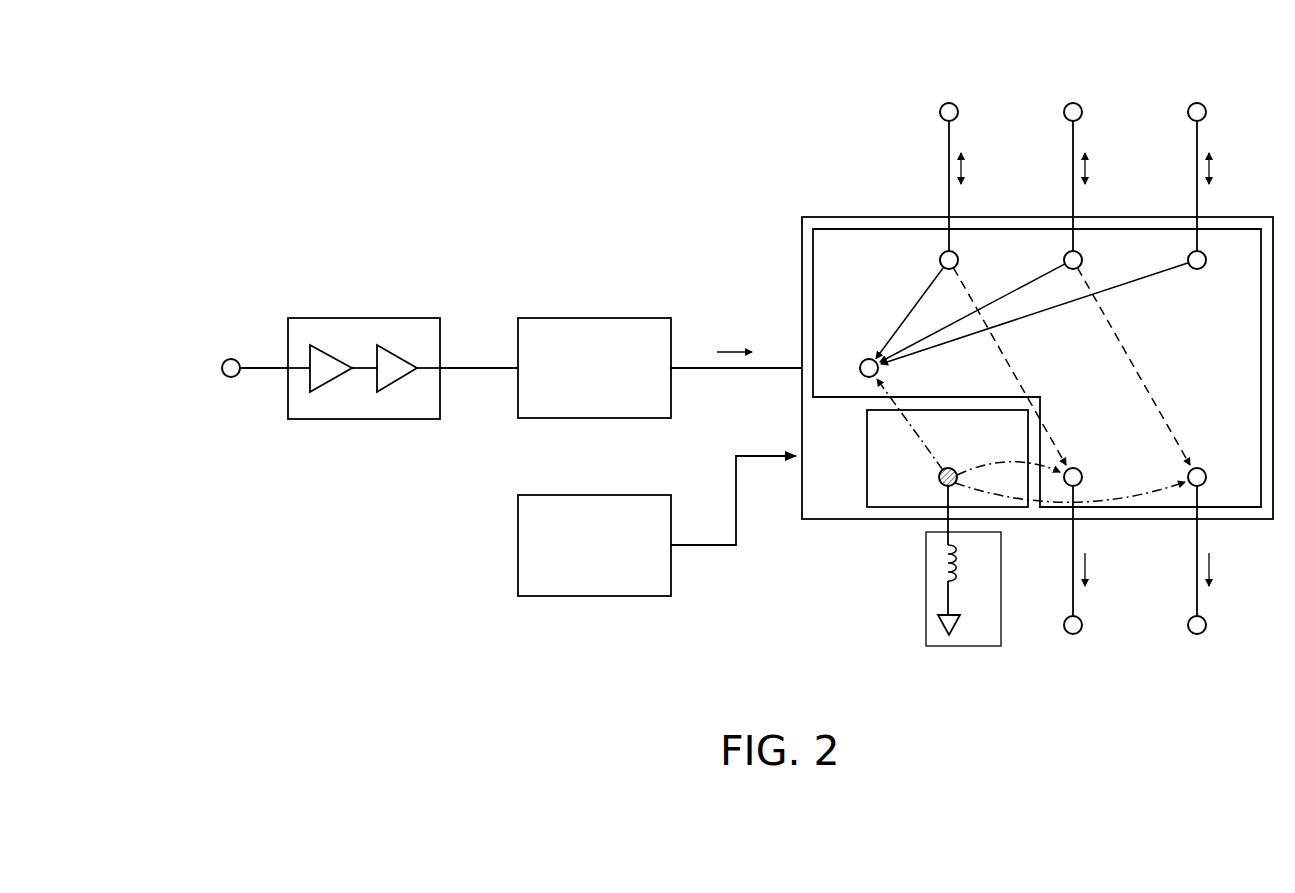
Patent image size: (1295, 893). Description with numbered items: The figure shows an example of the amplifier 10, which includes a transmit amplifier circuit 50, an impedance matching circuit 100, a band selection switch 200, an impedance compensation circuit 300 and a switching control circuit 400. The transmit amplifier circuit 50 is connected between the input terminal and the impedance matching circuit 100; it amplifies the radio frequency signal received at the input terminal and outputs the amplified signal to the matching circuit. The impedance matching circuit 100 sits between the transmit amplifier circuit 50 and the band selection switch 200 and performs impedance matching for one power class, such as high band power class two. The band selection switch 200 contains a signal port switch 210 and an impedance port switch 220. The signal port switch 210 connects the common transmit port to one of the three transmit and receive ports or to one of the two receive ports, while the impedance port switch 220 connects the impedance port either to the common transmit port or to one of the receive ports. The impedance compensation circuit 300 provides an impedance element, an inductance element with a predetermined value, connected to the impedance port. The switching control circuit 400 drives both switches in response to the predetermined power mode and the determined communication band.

The amplifier 10 is at (700, 76).
The transmit amplifier circuit 50 is at (405, 318).
The impedance matching circuit 100 is at (636, 318).
The band selection switch 200 is at (841, 217).
The signal port switch 210 is at (888, 229).
The impedance port switch 220 is at (887, 508).
The impedance compensation circuit 300 is at (963, 647).
The switching control circuit 400 is at (638, 495).